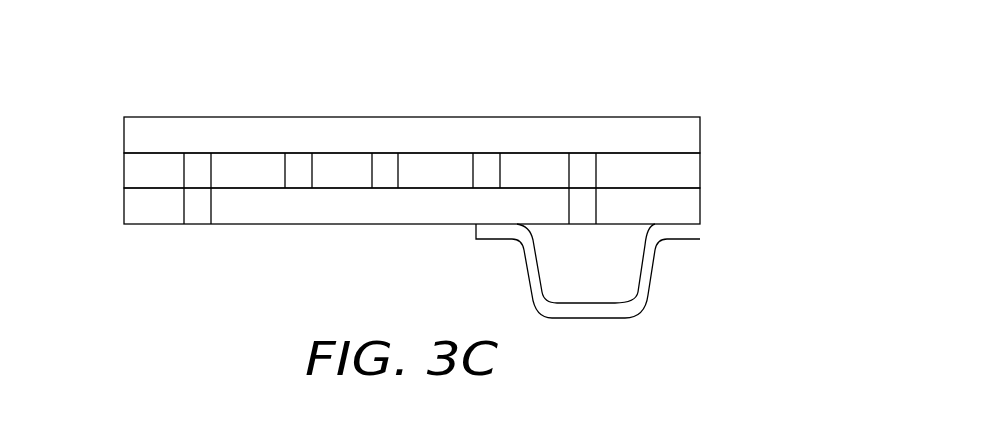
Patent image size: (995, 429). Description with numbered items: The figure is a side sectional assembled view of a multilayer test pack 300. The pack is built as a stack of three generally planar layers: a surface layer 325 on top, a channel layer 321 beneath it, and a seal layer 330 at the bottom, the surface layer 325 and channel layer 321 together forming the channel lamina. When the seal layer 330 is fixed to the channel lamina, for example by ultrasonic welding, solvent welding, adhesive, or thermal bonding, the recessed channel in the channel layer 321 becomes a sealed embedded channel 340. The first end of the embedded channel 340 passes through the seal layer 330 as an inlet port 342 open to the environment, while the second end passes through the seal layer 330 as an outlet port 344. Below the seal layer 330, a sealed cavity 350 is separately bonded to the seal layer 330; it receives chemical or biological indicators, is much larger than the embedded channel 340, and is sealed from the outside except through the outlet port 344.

The multilayer test pack 300 is at (675, 70).
The surface layer 325 is at (135, 132).
The channel layer 321 is at (135, 171).
The seal layer 330 is at (135, 212).
The embedded channel 340 is at (298, 165).
The inlet port 342 is at (199, 213).
The outlet port 344 is at (585, 207).
The sealed cavity 350 is at (518, 283).